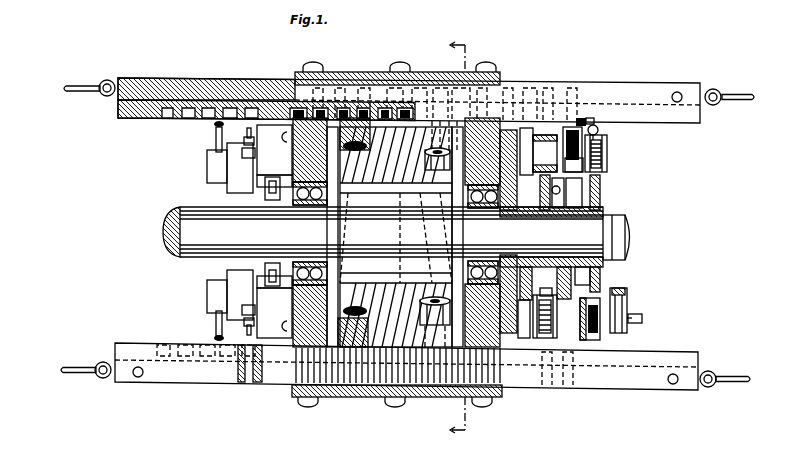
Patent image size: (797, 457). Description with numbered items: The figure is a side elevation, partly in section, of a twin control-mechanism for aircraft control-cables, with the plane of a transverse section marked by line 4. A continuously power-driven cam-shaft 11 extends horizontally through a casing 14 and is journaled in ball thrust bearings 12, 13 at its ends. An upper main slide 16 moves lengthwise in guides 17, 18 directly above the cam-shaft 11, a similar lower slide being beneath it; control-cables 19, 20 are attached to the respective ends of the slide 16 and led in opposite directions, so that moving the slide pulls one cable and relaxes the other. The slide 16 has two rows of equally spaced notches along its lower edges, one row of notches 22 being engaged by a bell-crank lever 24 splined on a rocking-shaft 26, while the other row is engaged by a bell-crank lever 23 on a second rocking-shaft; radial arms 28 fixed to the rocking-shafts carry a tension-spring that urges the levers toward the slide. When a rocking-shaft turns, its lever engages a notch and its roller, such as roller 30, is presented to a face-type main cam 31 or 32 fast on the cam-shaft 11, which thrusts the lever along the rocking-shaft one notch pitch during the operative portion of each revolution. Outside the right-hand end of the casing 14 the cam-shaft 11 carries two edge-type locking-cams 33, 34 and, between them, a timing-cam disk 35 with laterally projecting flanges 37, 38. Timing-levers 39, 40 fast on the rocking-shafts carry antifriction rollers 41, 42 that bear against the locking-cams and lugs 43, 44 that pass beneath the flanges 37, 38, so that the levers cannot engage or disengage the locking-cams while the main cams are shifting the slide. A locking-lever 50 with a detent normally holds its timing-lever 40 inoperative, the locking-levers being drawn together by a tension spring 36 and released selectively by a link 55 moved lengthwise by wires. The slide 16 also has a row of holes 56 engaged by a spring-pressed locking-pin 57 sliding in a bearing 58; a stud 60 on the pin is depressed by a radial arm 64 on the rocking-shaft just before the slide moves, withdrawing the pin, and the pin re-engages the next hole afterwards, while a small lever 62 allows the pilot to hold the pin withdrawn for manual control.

The section line 4 is at (463, 238).
The power-driven cam-shaft 11 is at (165, 233).
The ball thrust bearing 12 is at (310, 233).
The ball thrust bearing 13 is at (483, 234).
The casing 14 is at (503, 130).
The upper main slide 16 is at (185, 78).
The guide 17 is at (320, 100).
The guide 18 is at (483, 112).
The control-cable 19 is at (86, 84).
The control-cable 20 is at (740, 94).
The notch 22 is at (568, 88).
The bell-crank lever 23 is at (370, 138).
The bell-crank lever 24 is at (432, 140).
The rocking-shaft 26 is at (207, 163).
The radial arm 28 is at (215, 138).
The roller 30 is at (433, 170).
The main cam 31 is at (396, 237).
The main cam 32 is at (432, 238).
The locking-cam 33 is at (538, 192).
The locking-cam 34 is at (603, 185).
The timing-cam disk 35 is at (606, 266).
The tension spring 36 is at (643, 318).
The timing-cam flange 37 is at (582, 193).
The timing-cam flange 38 is at (592, 200).
The timing-lever 39 is at (528, 147).
The timing-lever 40 is at (608, 149).
The antifriction roller 41 is at (563, 145).
The antifriction roller 42 is at (602, 158).
The lug 43 is at (545, 153).
The lug 44 is at (574, 164).
The locking-lever 50 is at (626, 292).
The link 55 is at (628, 304).
The hole 56 is at (184, 120).
The locking-pin 57 is at (264, 106).
The bearing 58 is at (268, 165).
The stud 60 is at (240, 168).
The small lever 62 is at (270, 196).
The radial arm 64 is at (245, 138).